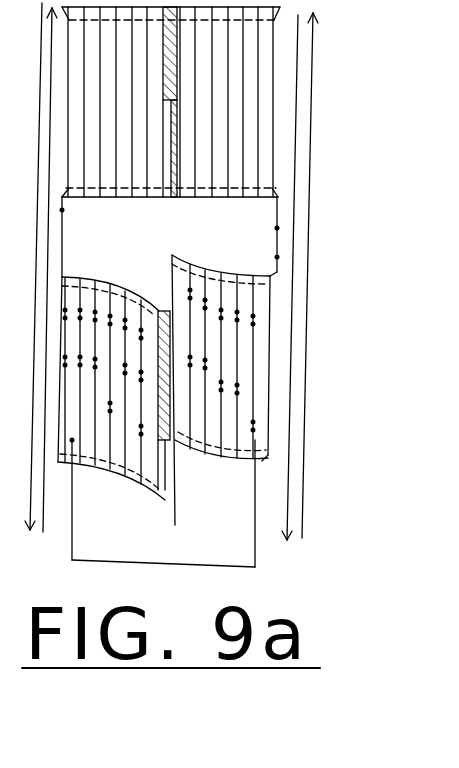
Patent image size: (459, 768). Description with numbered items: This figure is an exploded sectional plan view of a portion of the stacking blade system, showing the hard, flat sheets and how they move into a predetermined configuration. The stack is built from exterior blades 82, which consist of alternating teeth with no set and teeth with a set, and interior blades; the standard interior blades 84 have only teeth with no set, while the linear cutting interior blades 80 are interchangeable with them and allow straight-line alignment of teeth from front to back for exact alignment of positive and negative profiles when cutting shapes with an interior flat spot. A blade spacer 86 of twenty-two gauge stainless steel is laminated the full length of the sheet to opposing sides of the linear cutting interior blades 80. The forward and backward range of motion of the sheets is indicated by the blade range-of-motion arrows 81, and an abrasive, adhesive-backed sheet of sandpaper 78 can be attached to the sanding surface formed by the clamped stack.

The sandpaper 78 is at (128, 487).
The linear cutting interior blades 80 is at (143, 470).
The blade range-of-motion arrows 81 is at (303, 253).
The exterior blades 82 is at (255, 567).
The standard interior blades 84 is at (215, 140).
The blade spacer 86 is at (172, 165).